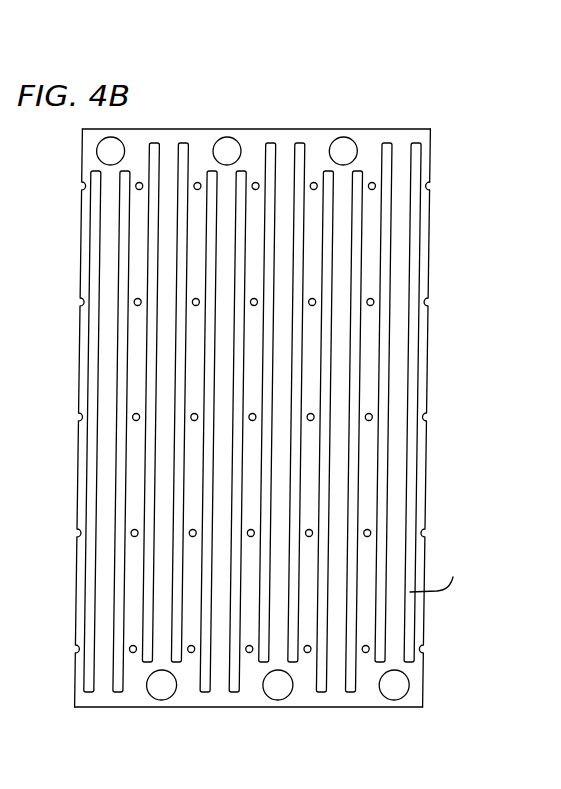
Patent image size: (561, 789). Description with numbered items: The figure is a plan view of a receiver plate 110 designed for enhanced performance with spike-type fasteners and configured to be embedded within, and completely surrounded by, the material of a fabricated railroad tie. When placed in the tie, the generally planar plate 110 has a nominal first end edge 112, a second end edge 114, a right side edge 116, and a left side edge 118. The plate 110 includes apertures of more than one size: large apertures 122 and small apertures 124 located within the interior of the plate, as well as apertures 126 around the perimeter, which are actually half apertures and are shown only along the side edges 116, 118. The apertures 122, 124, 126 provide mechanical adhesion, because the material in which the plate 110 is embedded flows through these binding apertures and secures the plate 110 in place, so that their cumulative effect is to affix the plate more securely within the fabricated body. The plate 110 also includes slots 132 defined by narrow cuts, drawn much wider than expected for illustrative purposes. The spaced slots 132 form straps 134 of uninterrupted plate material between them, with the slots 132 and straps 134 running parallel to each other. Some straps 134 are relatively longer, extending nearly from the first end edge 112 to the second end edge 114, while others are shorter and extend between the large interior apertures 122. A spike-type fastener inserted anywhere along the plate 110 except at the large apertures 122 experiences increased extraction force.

The receiver plate 110 is at (391, 66).
The first end edge 112 is at (402, 129).
The second end edge 114 is at (365, 708).
The right side edge 116 is at (428, 369).
The left side edge 118 is at (80, 330).
The large apertures 122 is at (407, 685).
The small apertures 124 is at (369, 528).
The half apertures 126 is at (431, 188).
The slots 132 is at (153, 150).
The straps 134 is at (168, 174).